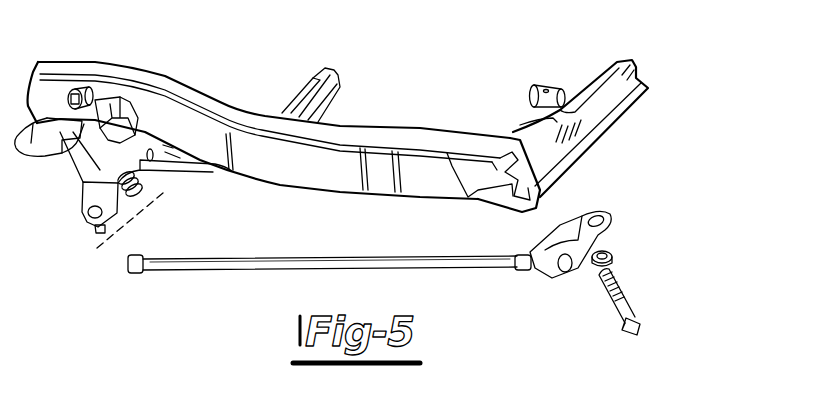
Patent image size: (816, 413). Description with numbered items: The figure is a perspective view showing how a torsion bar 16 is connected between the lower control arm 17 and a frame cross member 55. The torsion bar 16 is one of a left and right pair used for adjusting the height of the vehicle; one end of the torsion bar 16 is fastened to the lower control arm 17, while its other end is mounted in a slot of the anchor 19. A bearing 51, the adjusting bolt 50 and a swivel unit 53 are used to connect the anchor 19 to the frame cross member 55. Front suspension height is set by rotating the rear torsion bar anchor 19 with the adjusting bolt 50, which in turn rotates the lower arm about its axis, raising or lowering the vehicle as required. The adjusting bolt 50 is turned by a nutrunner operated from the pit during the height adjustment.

The frame cross member 55 is at (396, 108).
The swivel unit 53 is at (578, 53).
The lower control arm 17 is at (78, 186).
The torsion bar 16 is at (300, 258).
The anchor 19 is at (553, 230).
The bearing 51 is at (613, 255).
The adjusting bolt 50 is at (633, 305).